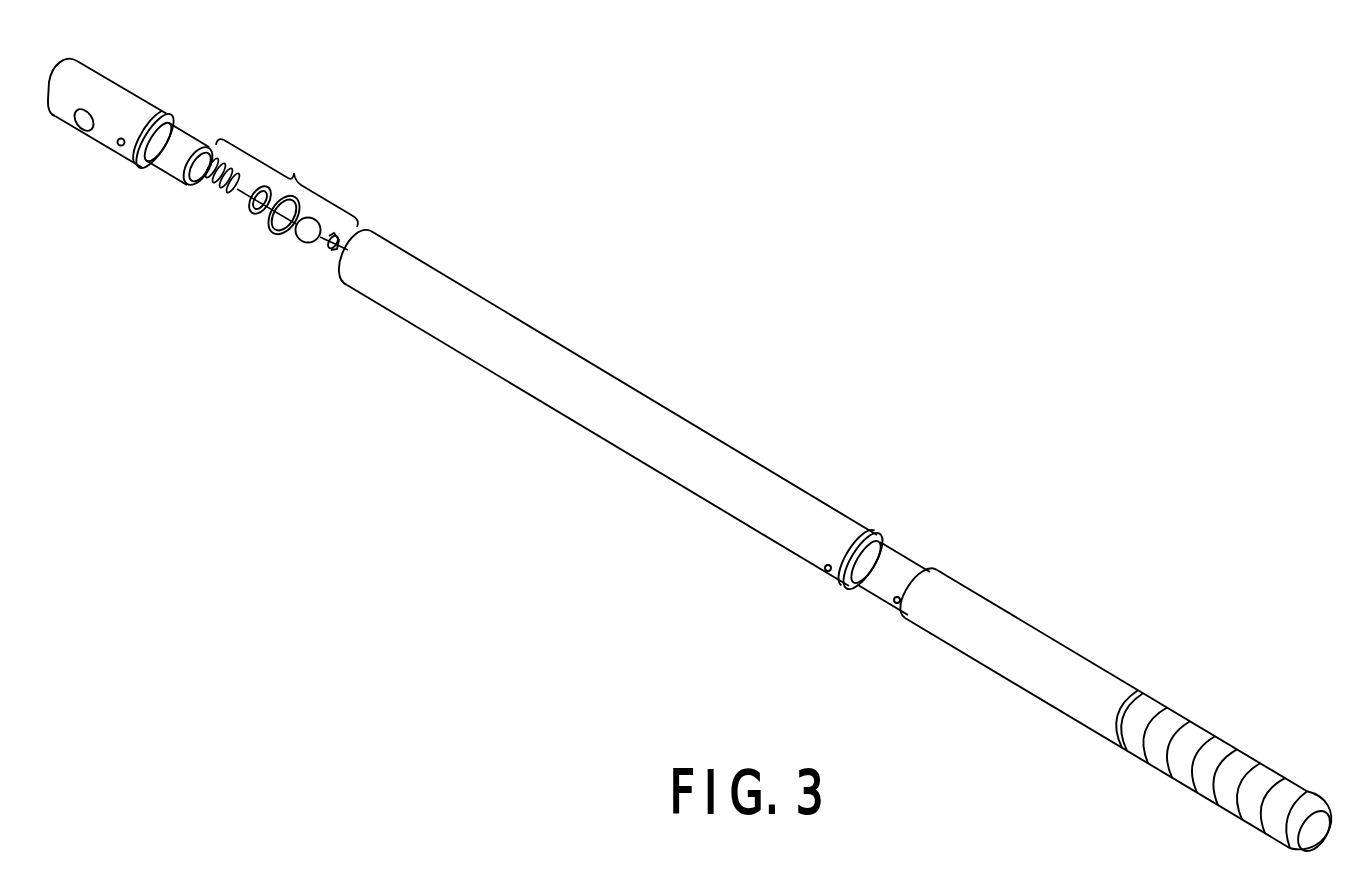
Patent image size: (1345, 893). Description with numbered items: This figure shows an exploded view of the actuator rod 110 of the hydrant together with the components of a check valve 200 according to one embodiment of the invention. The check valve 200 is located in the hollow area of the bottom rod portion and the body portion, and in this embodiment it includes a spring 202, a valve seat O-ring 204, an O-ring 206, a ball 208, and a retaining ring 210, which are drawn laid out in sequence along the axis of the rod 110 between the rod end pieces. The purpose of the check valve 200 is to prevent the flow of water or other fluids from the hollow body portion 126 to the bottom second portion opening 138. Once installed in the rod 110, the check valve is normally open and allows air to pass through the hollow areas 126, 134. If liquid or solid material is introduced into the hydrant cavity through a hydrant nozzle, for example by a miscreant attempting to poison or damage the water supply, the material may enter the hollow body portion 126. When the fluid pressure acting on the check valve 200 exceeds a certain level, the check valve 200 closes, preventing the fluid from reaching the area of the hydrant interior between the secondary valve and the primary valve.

The actuator rod 110 is at (740, 168).
The hollow body portion 126 is at (873, 537).
The hollow area 134 is at (214, 147).
The bottom second portion opening 138 is at (117, 150).
The check valve 200 is at (287, 194).
The spring 202 is at (215, 193).
The valve seat O-ring 204 is at (253, 213).
The O-ring 206 is at (275, 236).
The ball 208 is at (306, 243).
The retaining ring 210 is at (327, 251).